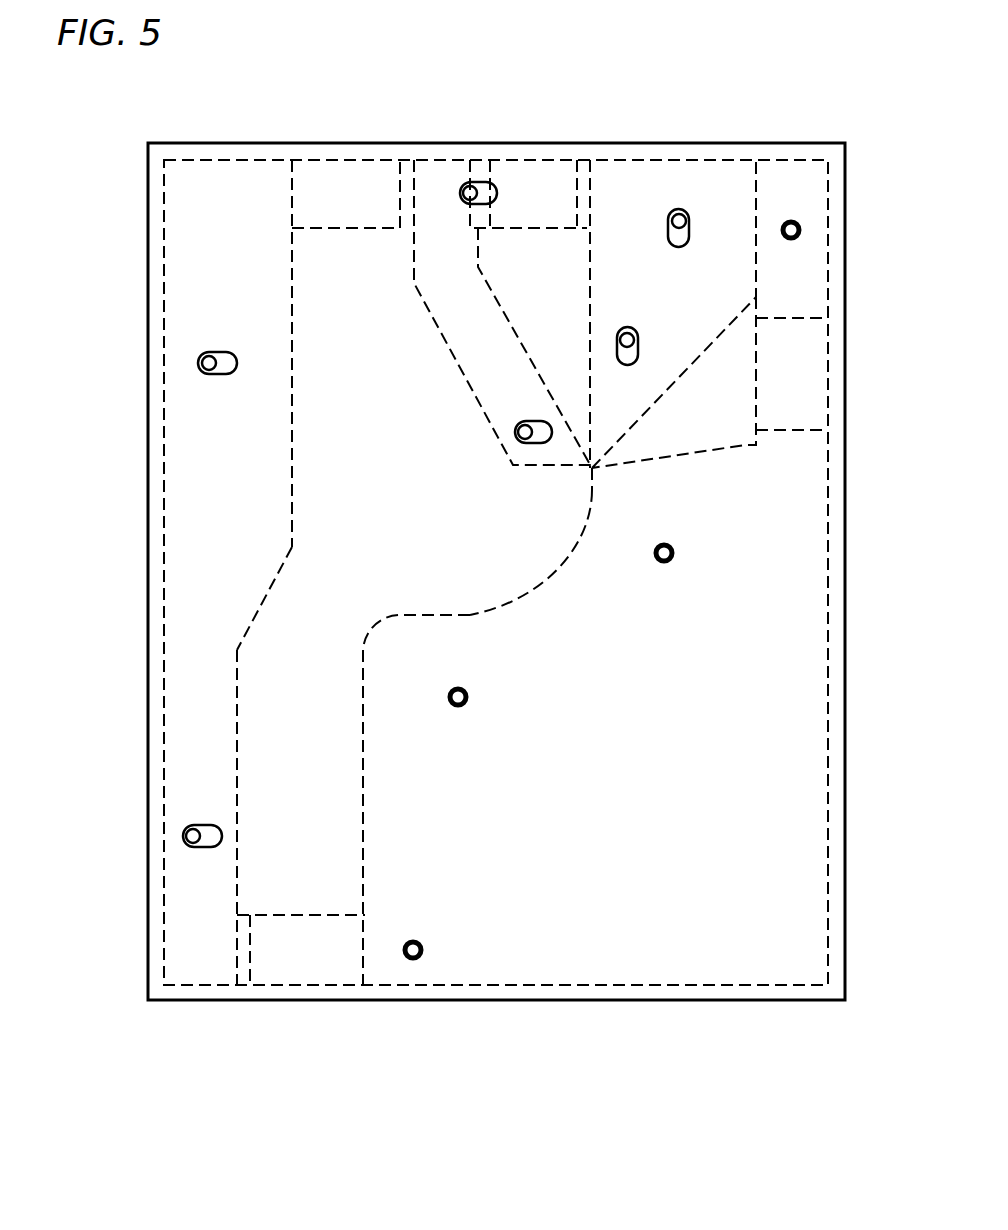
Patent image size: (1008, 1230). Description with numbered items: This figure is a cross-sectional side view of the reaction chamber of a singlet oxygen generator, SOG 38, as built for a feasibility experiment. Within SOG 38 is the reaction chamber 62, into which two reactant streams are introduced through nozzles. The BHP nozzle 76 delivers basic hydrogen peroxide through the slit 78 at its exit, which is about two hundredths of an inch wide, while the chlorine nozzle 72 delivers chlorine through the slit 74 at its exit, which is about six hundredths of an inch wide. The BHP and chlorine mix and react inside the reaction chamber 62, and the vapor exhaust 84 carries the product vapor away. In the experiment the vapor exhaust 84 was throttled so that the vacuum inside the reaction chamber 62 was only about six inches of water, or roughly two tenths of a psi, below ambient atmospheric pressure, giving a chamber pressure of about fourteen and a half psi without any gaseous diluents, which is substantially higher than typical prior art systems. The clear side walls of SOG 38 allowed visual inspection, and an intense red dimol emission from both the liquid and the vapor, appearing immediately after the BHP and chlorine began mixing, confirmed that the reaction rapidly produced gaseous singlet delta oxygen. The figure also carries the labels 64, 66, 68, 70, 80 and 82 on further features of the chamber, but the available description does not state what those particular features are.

The SOG 38 is at (98, 201).
The reaction chamber 62 is at (410, 540).
The base plate 64 is at (845, 551).
The mounting slots 66 is at (680, 208).
The mounting holes 68 is at (433, 193).
The lower left region 70 is at (310, 893).
The chlorine nozzle 72 is at (707, 424).
The slit 74 is at (593, 472).
The BHP nozzle 76 is at (530, 253).
The slit 78 is at (590, 472).
The curved boundary 80 is at (535, 583).
The angled boundary 82 is at (273, 587).
The vapor exhaust 84 is at (332, 252).